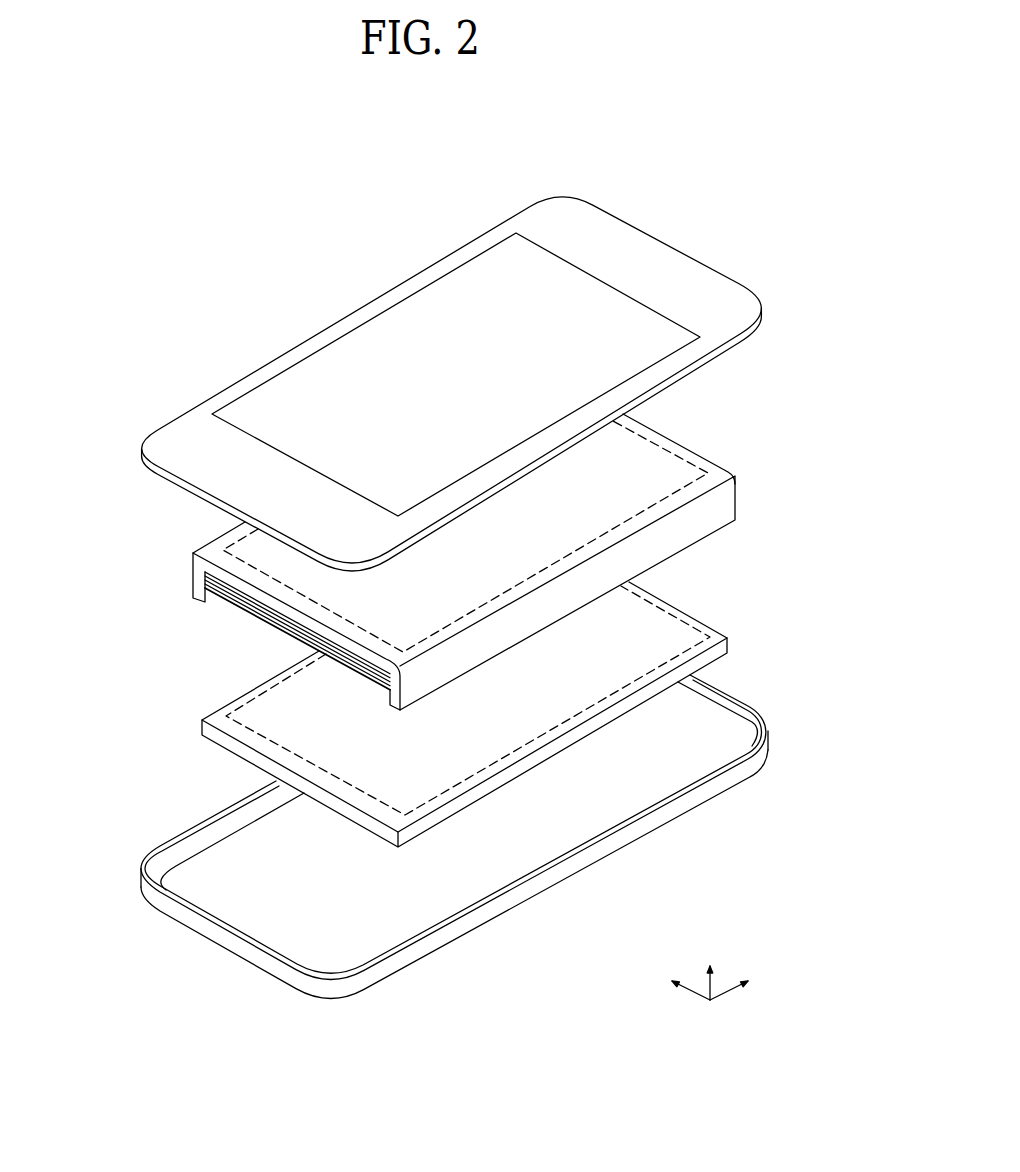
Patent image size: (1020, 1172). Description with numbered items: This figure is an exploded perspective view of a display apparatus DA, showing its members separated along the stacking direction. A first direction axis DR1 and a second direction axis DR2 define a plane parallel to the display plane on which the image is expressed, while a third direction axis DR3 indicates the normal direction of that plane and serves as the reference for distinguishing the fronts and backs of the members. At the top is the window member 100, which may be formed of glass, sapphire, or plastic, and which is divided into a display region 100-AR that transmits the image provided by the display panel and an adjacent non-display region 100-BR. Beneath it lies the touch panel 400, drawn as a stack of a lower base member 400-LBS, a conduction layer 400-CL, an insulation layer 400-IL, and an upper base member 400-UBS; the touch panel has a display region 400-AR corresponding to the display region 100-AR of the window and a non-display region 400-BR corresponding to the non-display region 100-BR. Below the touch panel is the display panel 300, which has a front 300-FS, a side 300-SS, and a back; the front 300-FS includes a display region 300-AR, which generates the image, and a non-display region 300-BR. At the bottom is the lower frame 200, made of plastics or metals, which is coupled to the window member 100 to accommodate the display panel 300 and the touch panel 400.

The display apparatus DA is at (688, 148).
The window member 100 is at (183, 403).
The display region of the window member 100-AR is at (500, 262).
The non-display region of the window member 100-BR is at (652, 262).
The lower frame 200 is at (752, 690).
The display panel 300 is at (222, 693).
The front of the display panel 300-FS is at (798, 600).
The side of the display panel 300-SS is at (232, 748).
The display region of the display panel 300-AR is at (623, 616).
The non-display region of the display panel 300-BR is at (681, 620).
The touch panel 400 is at (88, 544).
The display region of the touch panel 400-AR is at (622, 447).
The non-display region of the touch panel 400-BR is at (687, 460).
The upper base member 400-UBS is at (196, 558).
The insulation layer 400-IL is at (198, 576).
The conduction layer 400-CL is at (198, 580).
The lower base member 400-LBS is at (198, 586).
The first direction axis DR1 is at (672, 985).
The second direction axis DR2 is at (746, 985).
The third direction axis DR3 is at (709, 973).